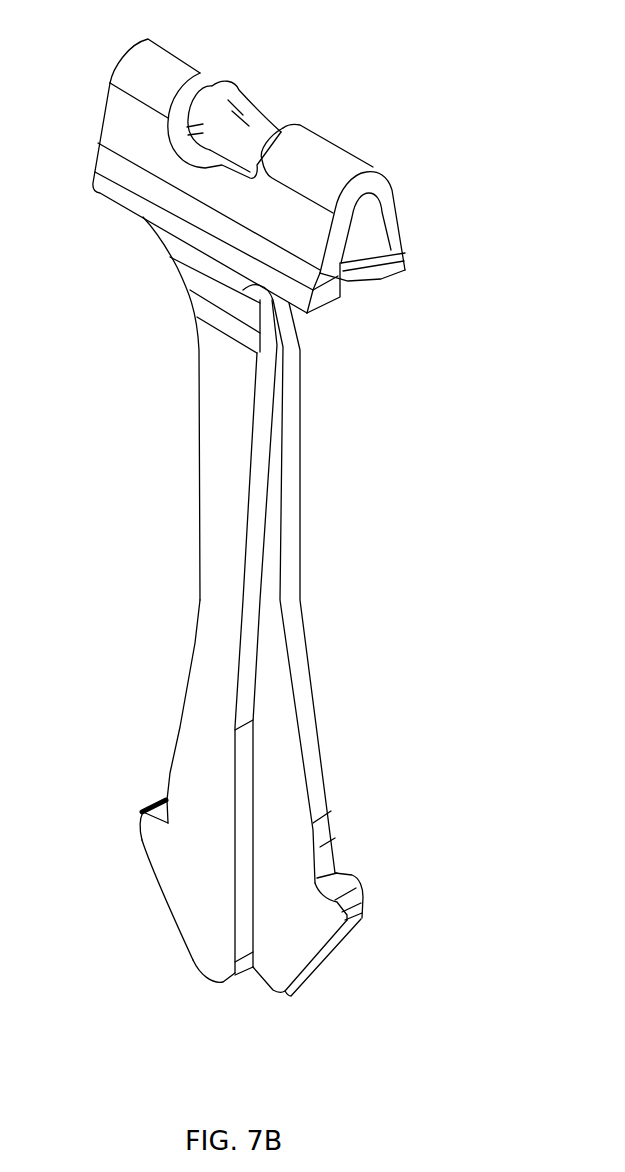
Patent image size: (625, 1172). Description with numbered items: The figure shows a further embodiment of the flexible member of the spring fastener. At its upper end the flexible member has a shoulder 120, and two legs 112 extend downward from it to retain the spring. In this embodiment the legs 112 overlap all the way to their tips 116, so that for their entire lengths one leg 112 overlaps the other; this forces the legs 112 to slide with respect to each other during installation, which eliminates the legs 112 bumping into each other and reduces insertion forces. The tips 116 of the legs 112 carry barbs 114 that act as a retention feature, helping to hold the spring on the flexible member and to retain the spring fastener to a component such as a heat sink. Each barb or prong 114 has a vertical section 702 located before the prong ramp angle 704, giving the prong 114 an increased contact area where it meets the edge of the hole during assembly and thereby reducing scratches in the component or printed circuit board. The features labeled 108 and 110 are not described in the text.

The channel 108 is at (191, 79).
The mounting pad 110 is at (340, 180).
The legs 112 is at (200, 480).
The barbs 114 is at (148, 807).
The tips 116 is at (207, 980).
The shoulder 120 is at (107, 198).
The vertical section 702 is at (140, 822).
The prong ramp angle 704 is at (158, 890).